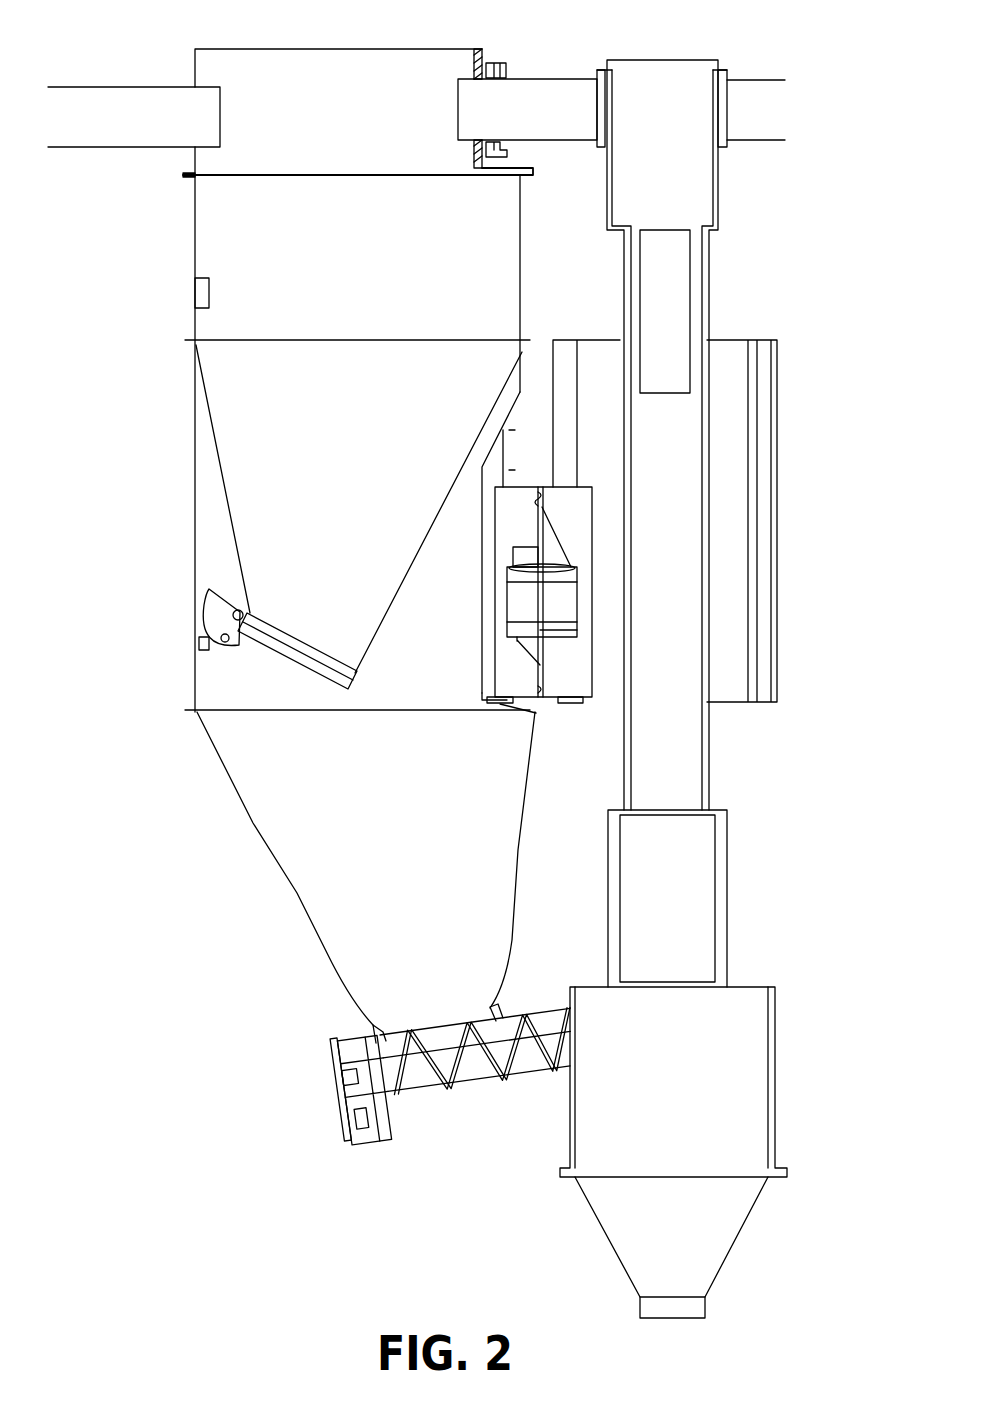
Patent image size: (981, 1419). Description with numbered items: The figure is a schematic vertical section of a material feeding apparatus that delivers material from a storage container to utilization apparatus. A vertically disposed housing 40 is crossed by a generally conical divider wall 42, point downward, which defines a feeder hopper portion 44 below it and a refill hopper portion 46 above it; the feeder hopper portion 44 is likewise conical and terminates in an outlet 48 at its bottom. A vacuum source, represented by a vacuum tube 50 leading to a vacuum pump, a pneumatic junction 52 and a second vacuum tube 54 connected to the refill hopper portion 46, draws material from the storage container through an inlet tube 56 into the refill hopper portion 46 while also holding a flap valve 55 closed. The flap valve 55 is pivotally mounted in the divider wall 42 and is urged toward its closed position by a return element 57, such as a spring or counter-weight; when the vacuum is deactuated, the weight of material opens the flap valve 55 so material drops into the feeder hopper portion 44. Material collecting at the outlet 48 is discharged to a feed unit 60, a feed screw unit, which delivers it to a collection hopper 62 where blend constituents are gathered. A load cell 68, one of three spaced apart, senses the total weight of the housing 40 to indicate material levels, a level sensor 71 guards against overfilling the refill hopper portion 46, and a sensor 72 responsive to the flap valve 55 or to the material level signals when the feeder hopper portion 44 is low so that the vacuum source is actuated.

The housing 40 is at (195, 461).
The divider wall 42 is at (202, 405).
The feeder hopper portion 44 is at (256, 820).
The refill hopper portion 46 is at (195, 213).
The outlet 48 is at (418, 1031).
The vacuum tube 50 is at (764, 80).
The pneumatic junction 52 is at (661, 60).
The second vacuum tube 54 is at (545, 79).
The flap valve 55 is at (288, 655).
The inlet tube 56 is at (148, 87).
The return element 57 is at (205, 600).
The feed unit 60 is at (458, 1095).
The collection hopper 62 is at (777, 1027).
The load cell 68 is at (572, 603).
The level sensor 71 is at (195, 290).
The sensor 72 is at (198, 650).